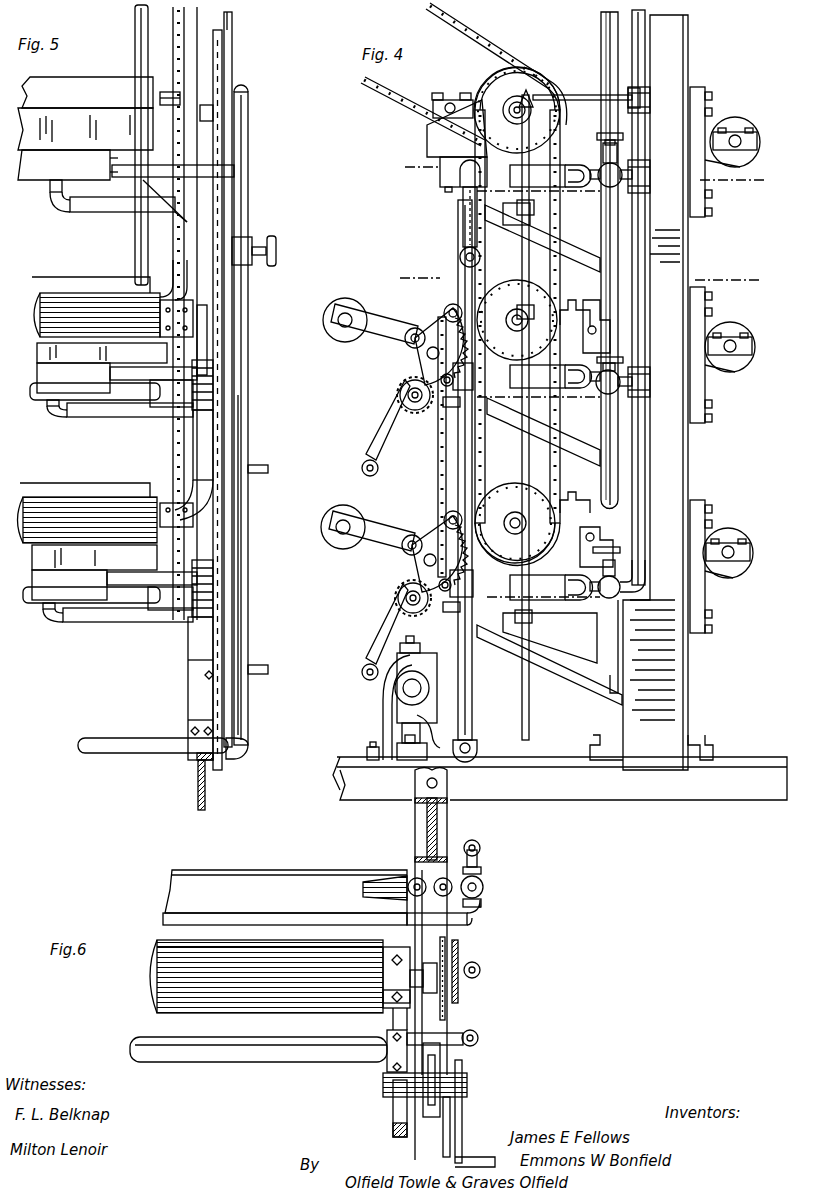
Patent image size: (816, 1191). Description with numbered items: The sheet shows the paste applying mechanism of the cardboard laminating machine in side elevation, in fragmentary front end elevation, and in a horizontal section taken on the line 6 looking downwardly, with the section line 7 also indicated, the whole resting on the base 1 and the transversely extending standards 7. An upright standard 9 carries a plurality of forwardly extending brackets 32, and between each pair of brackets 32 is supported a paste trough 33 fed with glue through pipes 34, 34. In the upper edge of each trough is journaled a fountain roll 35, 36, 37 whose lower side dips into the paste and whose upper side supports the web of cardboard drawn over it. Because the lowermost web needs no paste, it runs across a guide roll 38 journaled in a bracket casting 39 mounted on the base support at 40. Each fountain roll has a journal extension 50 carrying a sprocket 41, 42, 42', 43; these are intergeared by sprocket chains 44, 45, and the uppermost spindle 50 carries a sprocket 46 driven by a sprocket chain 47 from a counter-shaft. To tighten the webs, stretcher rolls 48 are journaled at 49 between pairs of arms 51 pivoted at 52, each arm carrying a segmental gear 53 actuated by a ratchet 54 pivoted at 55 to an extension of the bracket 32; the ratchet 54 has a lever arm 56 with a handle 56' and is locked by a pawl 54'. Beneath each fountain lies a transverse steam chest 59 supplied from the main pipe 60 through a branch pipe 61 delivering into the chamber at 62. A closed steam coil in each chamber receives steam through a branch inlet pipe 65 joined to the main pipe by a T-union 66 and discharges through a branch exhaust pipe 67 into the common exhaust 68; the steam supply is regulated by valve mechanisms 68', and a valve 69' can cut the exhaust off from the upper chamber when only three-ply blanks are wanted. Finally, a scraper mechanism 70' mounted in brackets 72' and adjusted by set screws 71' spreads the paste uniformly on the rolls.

In FIG. 5, the frame base 1 is at (208, 760).
In FIG. 4, the frame base 1 is at (740, 770).
In FIG. 4, the section line 6— 6 is at (580, 281).
In FIG. 4, the standard 7 is at (586, 175).
In FIG. 5, the upright standard 9 is at (229, 15).
In FIG. 4, the upright standard 9 is at (670, 52).
In FIG. 6, the upright standard 9 is at (448, 803).
In FIG. 5, the bracket 32 is at (193, 476).
In FIG. 4, the bracket 32 is at (490, 655).
In FIG. 5, the paste trough 33 is at (85, 129).
In FIG. 4, the paste trough 33 is at (428, 138).
In FIG. 6, the paste trough 33 is at (286, 891).
In FIG. 5, the pipe 34 is at (165, 13).
In FIG. 4, the pipe 34 is at (603, 20).
In FIG. 6, the pipe 34 is at (414, 878).
In FIG. 5, the fountain roll 35 is at (87, 92).
In FIG. 5, the fountain roll 36 is at (67, 270).
In FIG. 6, the fountain roll 36 is at (266, 976).
In FIG. 5, the fountain roll 37 is at (72, 475).
In FIG. 4, the guide roll 38 is at (425, 672).
In FIG. 4, the bracket casting 39 is at (383, 710).
In FIG. 4, the base support mounting 40 is at (368, 752).
In FIG. 5, the sprocket 41 is at (222, 77).
In FIG. 4, the sprocket 41 is at (535, 100).
In FIG. 5, the sprocket 42 is at (220, 393).
In FIG. 4, the sprocket 42 is at (581, 340).
In FIG. 6, the sprocket 42 is at (445, 975).
In FIG. 5, the sprocket 42' is at (248, 340).
In FIG. 6, the sprocket 42' is at (482, 971).
In FIG. 5, the sprocket 43 is at (213, 525).
In FIG. 4, the sprocket 43 is at (512, 492).
In FIG. 5, the sprocket chain 44 is at (222, 150).
In FIG. 4, the sprocket chain 44 is at (548, 210).
In FIG. 6, the sprocket chain 44 is at (445, 1022).
In FIG. 5, the sprocket chain 45 is at (240, 452).
In FIG. 4, the sprocket chain 45 is at (583, 402).
In FIG. 6, the sprocket chain 45 is at (480, 972).
In FIG. 5, the sprocket 46 is at (176, 135).
In FIG. 4, the sprocket 46 is at (492, 95).
In FIG. 5, the sprocket chain 47 is at (222, 10).
In FIG. 4, the sprocket chain 47 is at (485, 38).
In FIG. 5, the stretcher roll 48 is at (89, 410).
In FIG. 4, the stretcher roll 48 is at (345, 298).
In FIG. 4, the journal 49 is at (345, 340).
In FIG. 5, the journal extension 50 is at (207, 113).
In FIG. 4, the journal extension 50 is at (515, 105).
In FIG. 6, the journal extension 50 is at (440, 1000).
In FIG. 4, the arm 51 is at (373, 434).
In FIG. 6, the arm 51 is at (393, 1125).
In FIG. 4, the pivot 52 is at (405, 342).
In FIG. 5, the segmental gear 53 is at (213, 378).
In FIG. 4, the segmental gear 53 is at (400, 372).
In FIG. 6, the segmental gear 53 is at (428, 1117).
In FIG. 5, the ratchet 54 is at (172, 495).
In FIG. 4, the ratchet 54 is at (396, 497).
In FIG. 4, the pawl 54' is at (443, 501).
In FIG. 4, the pivot 55 is at (440, 384).
In FIG. 5, the lever arm 56 is at (259, 565).
In FIG. 4, the lever arm 56 is at (377, 530).
In FIG. 6, the lever arm 56 is at (472, 1111).
In FIG. 5, the handle 56' is at (276, 579).
In FIG. 4, the handle 56' is at (351, 567).
In FIG. 6, the handle 56' is at (475, 1153).
In FIG. 5, the steam chest 59 is at (26, 587).
In FIG. 4, the steam chest 59 is at (440, 180).
In FIG. 4, the main pipe 60 is at (645, 470).
In FIG. 6, the main pipe 60 is at (480, 848).
In FIG. 5, the branch pipe 61 is at (96, 212).
In FIG. 5, the chamber inlet 62 is at (50, 186).
In FIG. 4, the branch inlet pipe 65 is at (577, 189).
In FIG. 6, the branch inlet pipe 65 is at (480, 915).
In FIG. 4, the T-union 66 is at (650, 180).
In FIG. 5, the branch exhaust pipe 67 is at (131, 178).
In FIG. 6, the branch exhaust pipe 67 is at (405, 1040).
In FIG. 5, the common exhaust 68 is at (253, 422).
In FIG. 4, the common exhaust 68 is at (448, 217).
In FIG. 6, the common exhaust 68 is at (454, 1046).
In FIG. 4, the valve mechanism 68' is at (636, 382).
In FIG. 5, the valve 69' is at (270, 243).
In FIG. 4, the valve 69' is at (439, 257).
In FIG. 4, the scraper mechanism 70' is at (589, 489).
In FIG. 6, the scraper mechanism 70' is at (285, 928).
In FIG. 4, the set screw 71' is at (670, 360).
In FIG. 4, the bracket 72' is at (639, 435).